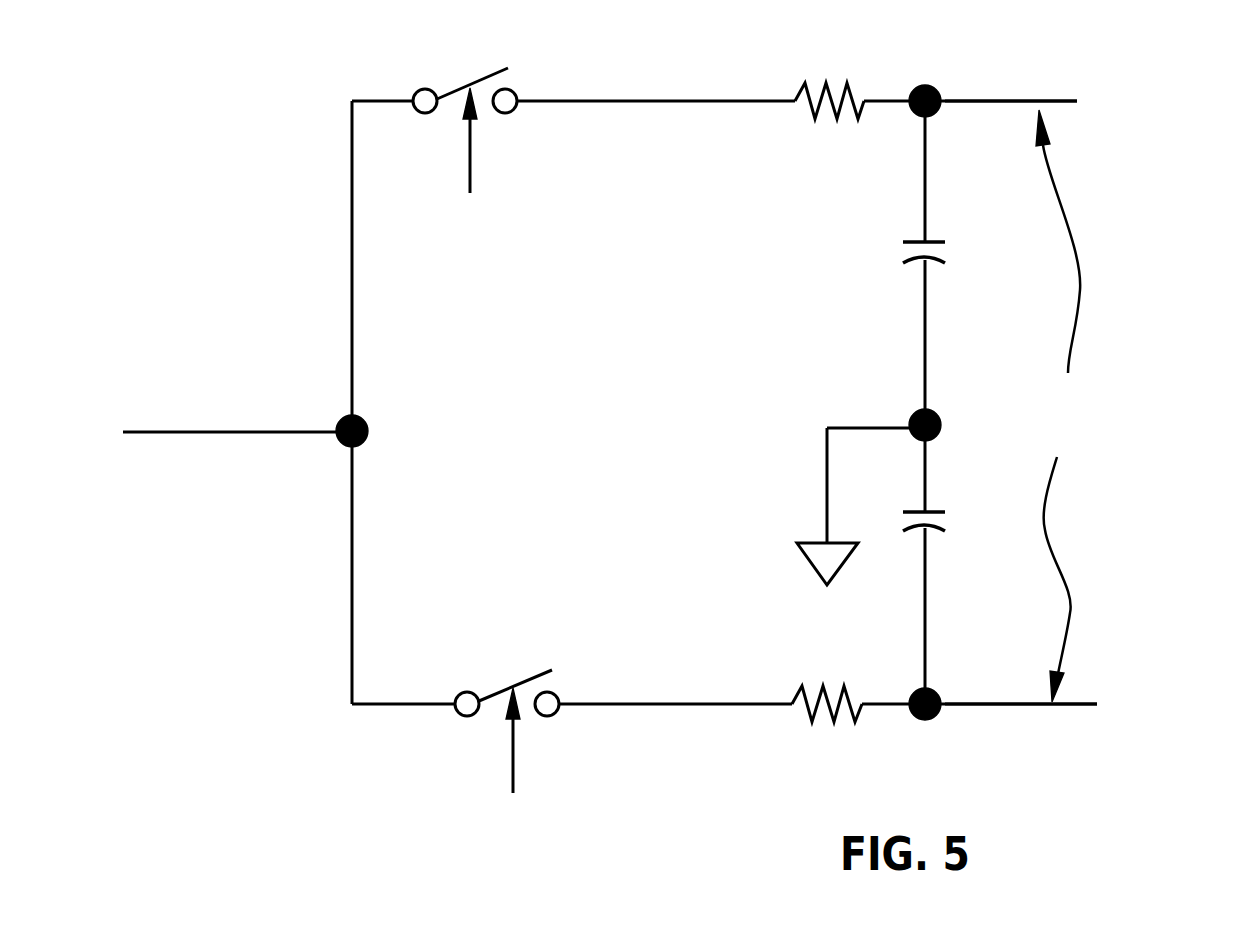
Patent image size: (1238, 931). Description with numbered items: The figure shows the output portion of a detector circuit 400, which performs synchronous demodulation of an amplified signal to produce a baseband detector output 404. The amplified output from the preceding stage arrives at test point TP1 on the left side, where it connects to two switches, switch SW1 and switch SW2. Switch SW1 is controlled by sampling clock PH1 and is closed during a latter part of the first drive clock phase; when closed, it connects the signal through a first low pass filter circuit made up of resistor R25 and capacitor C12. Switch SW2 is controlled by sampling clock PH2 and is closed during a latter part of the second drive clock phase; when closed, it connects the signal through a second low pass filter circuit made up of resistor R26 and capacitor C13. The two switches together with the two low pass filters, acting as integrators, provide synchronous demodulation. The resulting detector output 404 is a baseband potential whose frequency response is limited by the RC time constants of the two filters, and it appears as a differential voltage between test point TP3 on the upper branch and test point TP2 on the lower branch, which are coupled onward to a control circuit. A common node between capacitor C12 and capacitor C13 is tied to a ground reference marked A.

The detector circuit 400 is at (1140, 170).
The detector output 404 is at (1079, 406).
The test point TP1 is at (232, 408).
The test point TP2 is at (1021, 723).
The test point TP3 is at (1011, 80).
The switch SW1 is at (465, 77).
The switch SW2 is at (507, 680).
The sampling clock PH1 is at (467, 156).
The sampling clock PH2 is at (522, 764).
The resistor R25 is at (829, 81).
The resistor R26 is at (827, 684).
The capacitor C12 is at (952, 251).
The capacitor C13 is at (957, 515).
The ground A is at (861, 506).